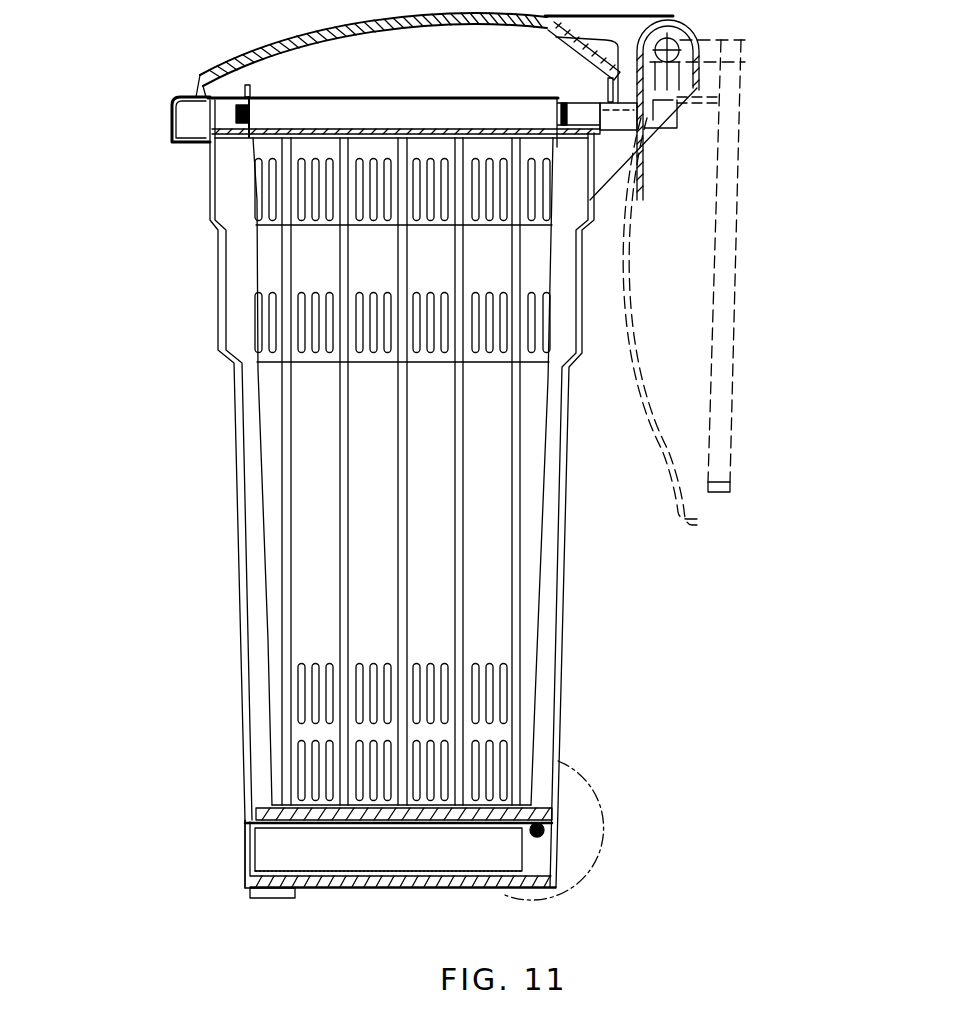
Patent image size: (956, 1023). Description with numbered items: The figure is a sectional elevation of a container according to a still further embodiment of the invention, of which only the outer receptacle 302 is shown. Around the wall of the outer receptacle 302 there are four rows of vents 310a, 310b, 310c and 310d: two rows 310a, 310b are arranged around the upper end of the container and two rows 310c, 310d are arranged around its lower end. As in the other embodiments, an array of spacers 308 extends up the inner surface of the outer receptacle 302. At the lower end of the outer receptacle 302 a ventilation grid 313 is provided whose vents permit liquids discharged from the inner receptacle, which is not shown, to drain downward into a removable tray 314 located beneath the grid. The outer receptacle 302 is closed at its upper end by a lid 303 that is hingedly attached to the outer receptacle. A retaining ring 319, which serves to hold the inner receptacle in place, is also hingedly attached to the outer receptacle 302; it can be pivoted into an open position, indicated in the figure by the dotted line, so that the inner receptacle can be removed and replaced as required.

The outer receptacle 302 is at (245, 432).
The lid 303 is at (213, 80).
The spacers 308 is at (285, 515).
The row of vents 310a is at (257, 197).
The row of vents 310b is at (258, 322).
The row of vents 310c is at (303, 685).
The row of vents 310d is at (303, 768).
The ventilation grid 313 is at (352, 828).
The removable tray 314 is at (243, 840).
The retaining ring 319 is at (235, 113).